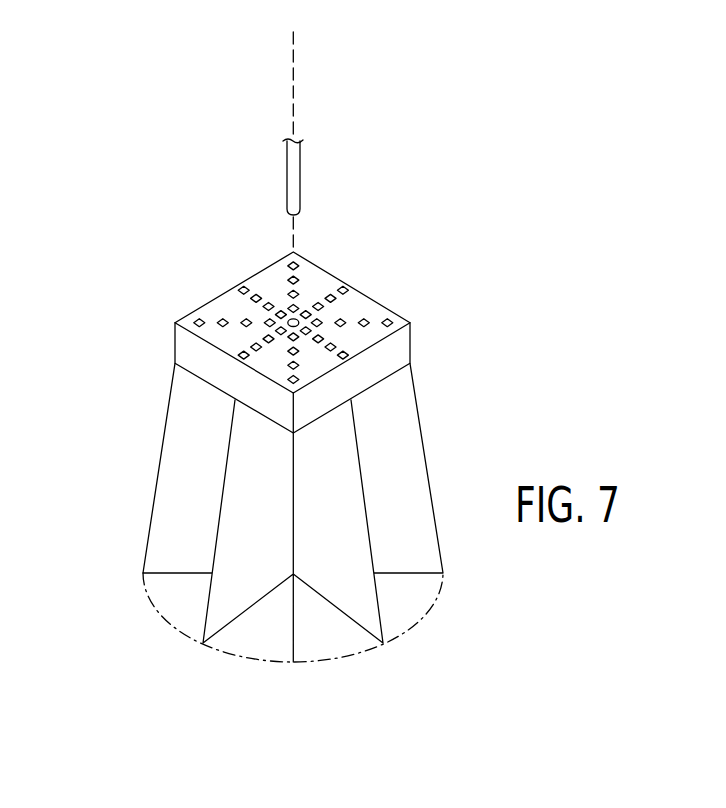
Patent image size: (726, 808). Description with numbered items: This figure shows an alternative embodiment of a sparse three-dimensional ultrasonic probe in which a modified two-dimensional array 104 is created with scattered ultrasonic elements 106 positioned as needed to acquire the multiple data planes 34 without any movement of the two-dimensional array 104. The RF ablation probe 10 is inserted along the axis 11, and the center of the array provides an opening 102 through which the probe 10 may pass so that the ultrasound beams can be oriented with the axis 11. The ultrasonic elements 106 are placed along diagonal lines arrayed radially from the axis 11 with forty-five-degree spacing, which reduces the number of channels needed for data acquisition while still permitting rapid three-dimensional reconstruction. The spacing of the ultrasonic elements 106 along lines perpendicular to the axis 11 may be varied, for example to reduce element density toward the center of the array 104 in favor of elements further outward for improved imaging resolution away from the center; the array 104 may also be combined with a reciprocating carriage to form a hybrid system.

The axis 11 is at (295, 82).
The RF ablation probe 10 is at (287, 173).
The opening 102 is at (295, 318).
The two-dimensional array 104 is at (190, 352).
The ultrasonic elements 106 is at (245, 317).
The data planes 34 is at (293, 547).